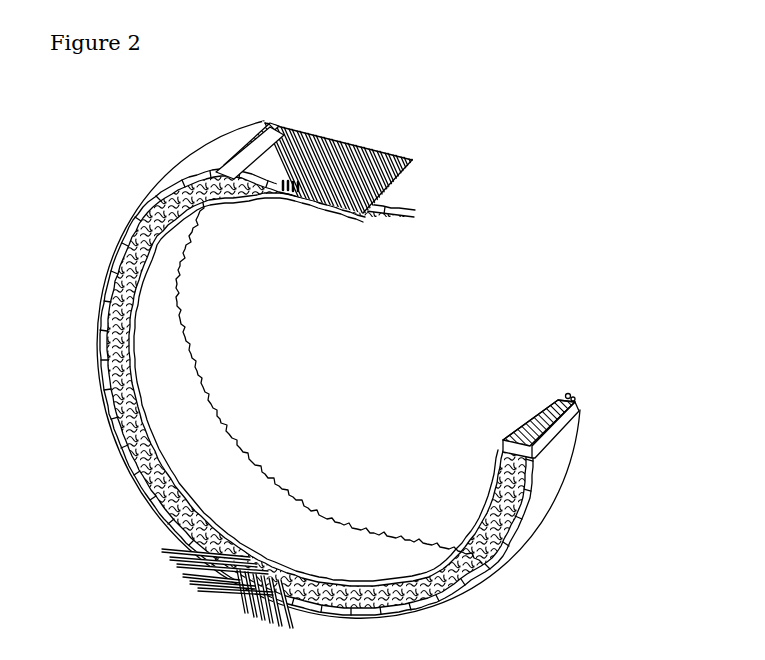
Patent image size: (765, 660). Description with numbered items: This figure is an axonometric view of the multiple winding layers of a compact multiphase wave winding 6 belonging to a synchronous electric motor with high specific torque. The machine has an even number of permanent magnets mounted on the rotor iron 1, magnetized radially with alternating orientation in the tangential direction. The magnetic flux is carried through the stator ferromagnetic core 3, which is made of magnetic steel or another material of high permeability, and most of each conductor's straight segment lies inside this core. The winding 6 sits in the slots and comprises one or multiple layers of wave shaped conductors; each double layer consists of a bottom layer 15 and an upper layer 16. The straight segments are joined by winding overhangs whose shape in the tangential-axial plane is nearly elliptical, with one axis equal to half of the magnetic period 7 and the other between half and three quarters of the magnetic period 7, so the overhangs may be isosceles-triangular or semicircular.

The rotor iron 1 is at (580, 428).
The stator ferromagnetic core 3 is at (387, 193).
The winding 6 is at (250, 453).
The magnetic period 7 is at (128, 468).
The bottom layer 15 is at (470, 553).
The upper layer 16 is at (490, 548).